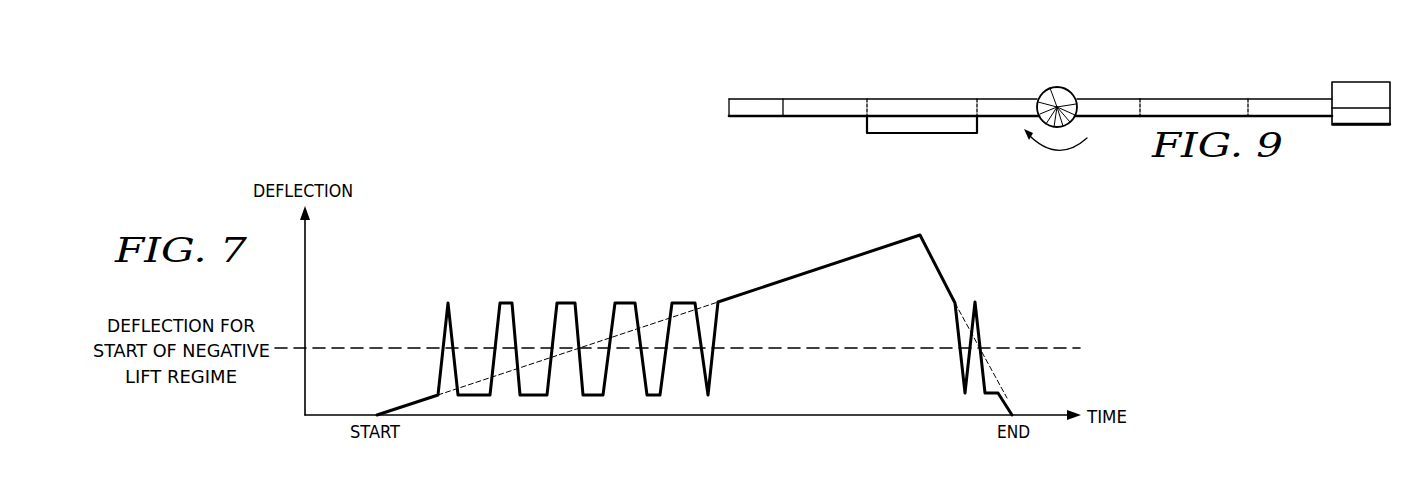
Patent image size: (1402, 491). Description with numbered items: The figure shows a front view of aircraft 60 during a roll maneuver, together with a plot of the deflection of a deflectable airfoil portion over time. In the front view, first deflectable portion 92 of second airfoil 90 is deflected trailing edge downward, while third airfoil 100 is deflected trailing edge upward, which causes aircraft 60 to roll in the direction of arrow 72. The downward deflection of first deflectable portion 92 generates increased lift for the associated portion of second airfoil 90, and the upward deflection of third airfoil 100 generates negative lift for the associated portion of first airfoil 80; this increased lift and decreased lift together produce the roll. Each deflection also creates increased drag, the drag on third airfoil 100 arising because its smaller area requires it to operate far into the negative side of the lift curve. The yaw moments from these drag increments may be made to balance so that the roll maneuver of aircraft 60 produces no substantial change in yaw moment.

The aircraft 60 is at (1120, 80).
The arrow 72 is at (1058, 147).
The first airfoil 80 is at (1290, 108).
The second airfoil 90 is at (825, 107).
The first deflectable portion 92 is at (931, 127).
The third airfoil 100 is at (1345, 88).